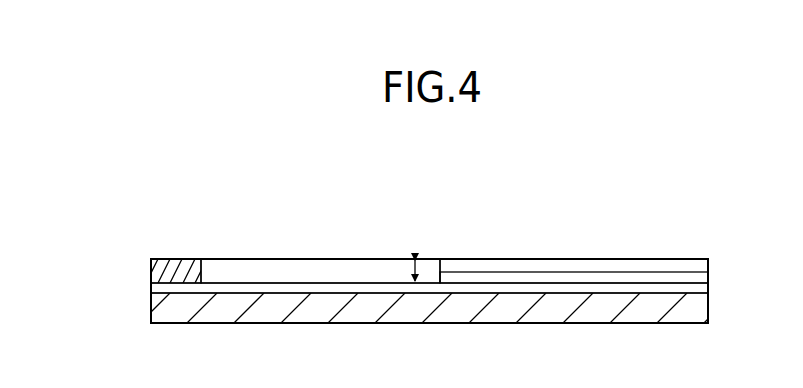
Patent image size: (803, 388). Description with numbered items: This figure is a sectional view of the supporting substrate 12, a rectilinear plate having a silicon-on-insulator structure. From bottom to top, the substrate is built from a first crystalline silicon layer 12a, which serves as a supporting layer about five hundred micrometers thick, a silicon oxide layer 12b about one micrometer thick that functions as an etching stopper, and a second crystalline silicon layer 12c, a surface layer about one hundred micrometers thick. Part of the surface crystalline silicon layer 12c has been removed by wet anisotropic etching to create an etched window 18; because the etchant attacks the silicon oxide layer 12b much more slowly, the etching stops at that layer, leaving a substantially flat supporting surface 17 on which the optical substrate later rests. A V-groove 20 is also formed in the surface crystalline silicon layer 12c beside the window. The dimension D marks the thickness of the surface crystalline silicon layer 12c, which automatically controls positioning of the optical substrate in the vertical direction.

The supporting substrate 12 is at (719, 258).
The crystalline silicon layer 12a is at (151, 313).
The silicon oxide layer 12b is at (151, 289).
The crystalline silicon layer 12c is at (151, 268).
The supporting surface 17 is at (300, 283).
The etched window 18 is at (237, 274).
The V-groove 20 is at (598, 272).
The dimension D is at (412, 258).